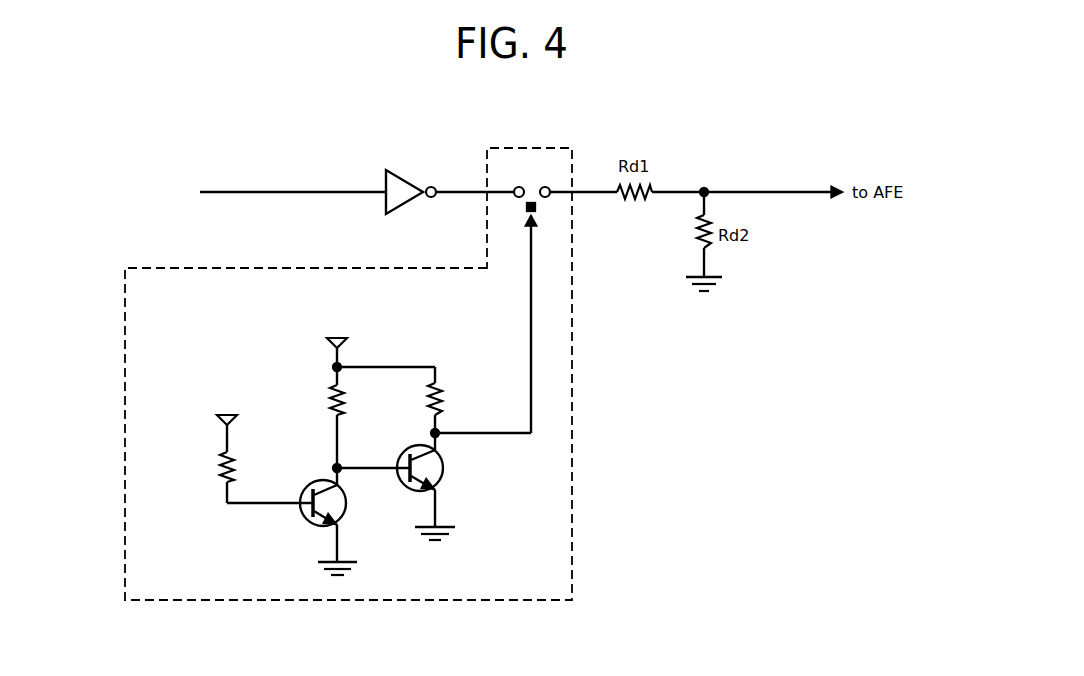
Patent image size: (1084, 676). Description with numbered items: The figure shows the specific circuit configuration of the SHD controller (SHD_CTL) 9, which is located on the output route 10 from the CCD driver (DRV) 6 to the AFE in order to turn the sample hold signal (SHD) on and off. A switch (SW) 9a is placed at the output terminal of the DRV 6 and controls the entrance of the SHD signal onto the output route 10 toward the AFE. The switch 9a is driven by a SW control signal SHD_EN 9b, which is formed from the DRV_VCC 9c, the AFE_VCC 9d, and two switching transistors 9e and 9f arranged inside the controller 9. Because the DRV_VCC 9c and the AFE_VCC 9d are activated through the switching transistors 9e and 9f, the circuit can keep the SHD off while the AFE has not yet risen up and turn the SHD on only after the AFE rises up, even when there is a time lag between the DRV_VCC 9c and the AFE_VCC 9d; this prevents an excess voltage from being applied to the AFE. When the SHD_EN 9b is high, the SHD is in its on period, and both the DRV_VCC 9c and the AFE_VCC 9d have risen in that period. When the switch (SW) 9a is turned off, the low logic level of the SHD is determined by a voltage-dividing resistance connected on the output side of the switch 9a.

The output route 10 is at (267, 190).
The CCD driver (DRV) 6 is at (386, 206).
The SHD controller (SHD_CTL) 9 is at (572, 443).
The switch (SW) 9a is at (534, 172).
The SW control signal SHD_EN 9b is at (483, 329).
The DRV_VCC 9c is at (348, 399).
The AFE_VCC 9d is at (226, 447).
The switching transistor 9e is at (441, 476).
The switching transistor 9f is at (306, 520).